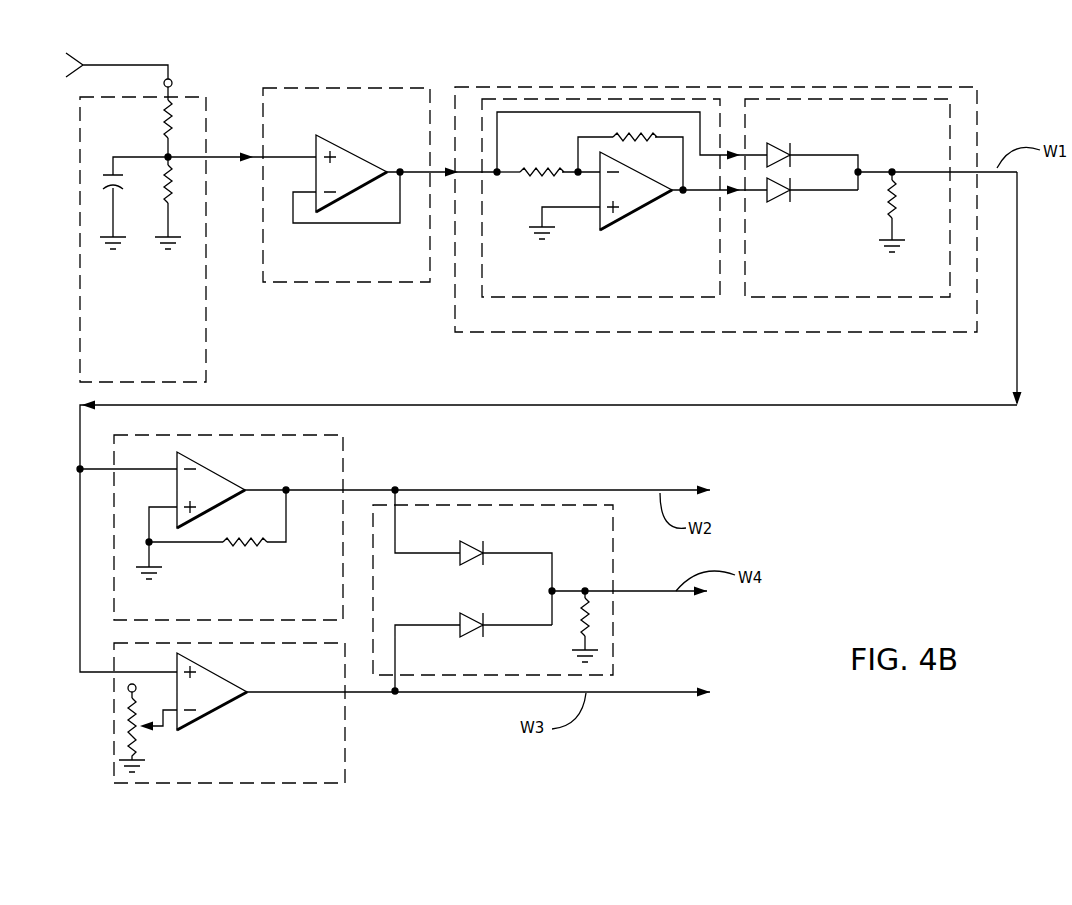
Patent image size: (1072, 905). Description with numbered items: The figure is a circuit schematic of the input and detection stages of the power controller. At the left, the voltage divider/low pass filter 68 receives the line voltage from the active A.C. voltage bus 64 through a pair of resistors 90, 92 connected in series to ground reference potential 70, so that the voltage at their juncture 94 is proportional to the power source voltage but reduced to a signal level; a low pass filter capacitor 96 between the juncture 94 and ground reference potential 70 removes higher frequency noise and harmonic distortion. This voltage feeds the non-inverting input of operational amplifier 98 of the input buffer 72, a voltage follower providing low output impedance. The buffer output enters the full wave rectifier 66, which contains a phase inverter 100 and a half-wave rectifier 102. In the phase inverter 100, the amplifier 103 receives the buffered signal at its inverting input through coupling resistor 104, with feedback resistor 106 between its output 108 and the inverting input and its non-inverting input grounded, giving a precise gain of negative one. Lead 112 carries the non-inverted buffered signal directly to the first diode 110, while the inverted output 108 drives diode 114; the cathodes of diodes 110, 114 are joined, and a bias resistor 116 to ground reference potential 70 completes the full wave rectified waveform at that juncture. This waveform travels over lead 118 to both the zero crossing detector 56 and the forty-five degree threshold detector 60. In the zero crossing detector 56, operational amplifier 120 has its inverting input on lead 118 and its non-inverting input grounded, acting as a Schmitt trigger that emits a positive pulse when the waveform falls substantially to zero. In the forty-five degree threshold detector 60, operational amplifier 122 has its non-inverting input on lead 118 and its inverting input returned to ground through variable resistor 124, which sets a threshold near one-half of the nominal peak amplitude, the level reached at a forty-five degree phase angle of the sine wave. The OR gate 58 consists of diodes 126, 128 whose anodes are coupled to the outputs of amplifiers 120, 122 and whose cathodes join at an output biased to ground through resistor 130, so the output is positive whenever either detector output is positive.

The active A.C. voltage bus 64 is at (174, 64).
The voltage divider/low pass filter 68 is at (143, 239).
The resistor 90 is at (175, 122).
The resistor 92 is at (175, 206).
The juncture 94 is at (166, 155).
The low pass filter capacitor 96 is at (112, 173).
The ground reference potential 70 is at (165, 236).
The input buffer 72 is at (346, 185).
The operational amplifier 98 is at (353, 151).
The full wave rectifier 66 is at (716, 209).
The phase inverter 100 is at (601, 198).
The lead 112 is at (564, 116).
The coupling resistor 104 is at (556, 170).
The feedback resistor 106 is at (631, 137).
The amplifier 103 is at (656, 204).
The output 108 is at (696, 196).
The half-wave rectifier 102 is at (847, 198).
The first diode 110 is at (780, 146).
The diode 114 is at (780, 186).
The bias resistor 116 is at (896, 212).
The lead 118 is at (566, 403).
The zero crossing detector 56 is at (228, 527).
The operational amplifier 120 is at (226, 478).
The OR gate 58 is at (493, 590).
The diode 126 is at (476, 540).
The diode 128 is at (474, 640).
The resistor 130 is at (596, 628).
The 45 degree threshold detector 60 is at (229, 713).
The operational amplifier 122 is at (226, 684).
The variable resistor 124 is at (127, 712).